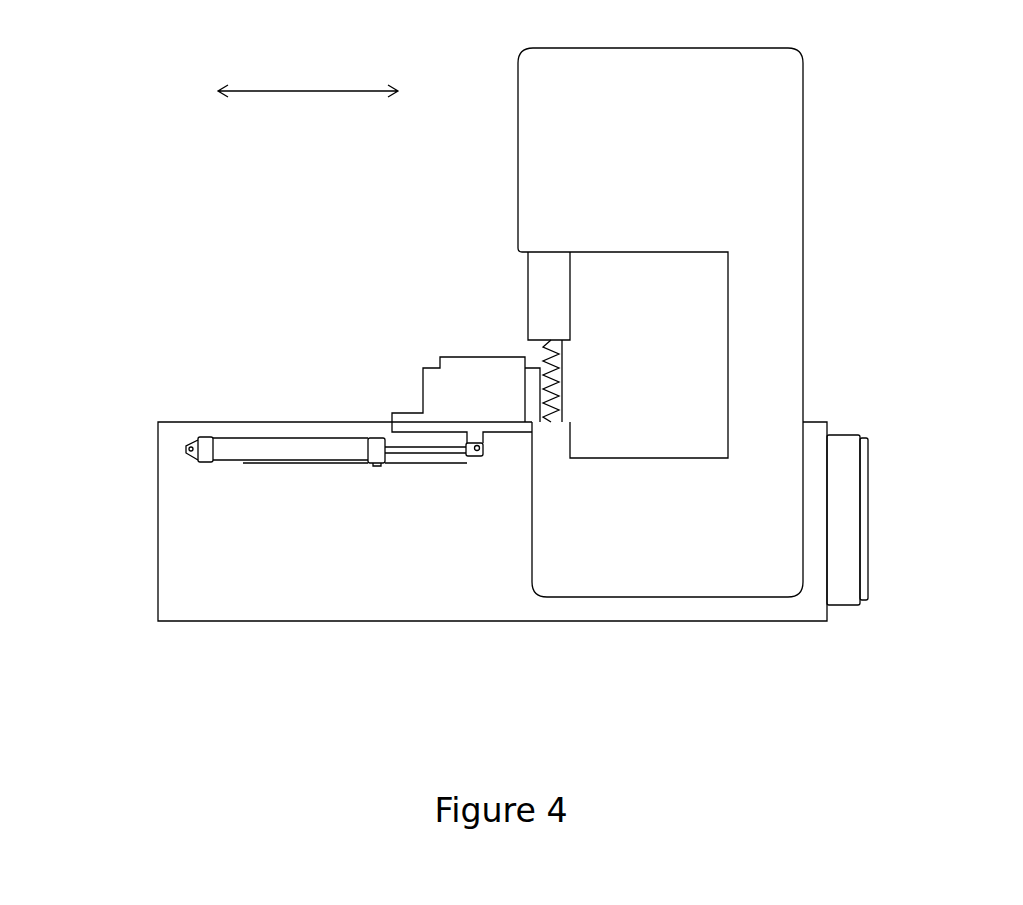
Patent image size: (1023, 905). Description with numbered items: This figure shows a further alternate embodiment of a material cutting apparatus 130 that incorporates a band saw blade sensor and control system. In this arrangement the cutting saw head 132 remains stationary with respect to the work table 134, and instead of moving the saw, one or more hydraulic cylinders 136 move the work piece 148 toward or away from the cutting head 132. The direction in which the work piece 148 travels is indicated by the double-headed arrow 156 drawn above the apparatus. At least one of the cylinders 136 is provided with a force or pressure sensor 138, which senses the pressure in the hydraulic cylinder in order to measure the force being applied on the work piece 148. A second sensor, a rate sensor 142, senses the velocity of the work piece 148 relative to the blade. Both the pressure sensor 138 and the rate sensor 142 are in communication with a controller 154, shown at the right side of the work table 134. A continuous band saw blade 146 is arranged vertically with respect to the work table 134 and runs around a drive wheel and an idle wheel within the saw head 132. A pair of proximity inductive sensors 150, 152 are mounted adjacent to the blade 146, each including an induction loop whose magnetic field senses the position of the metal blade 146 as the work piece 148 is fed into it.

The material cutting apparatus 130 is at (188, 188).
The cutting saw head 132 is at (783, 311).
The work table 134 is at (183, 557).
The hydraulic cylinder 136 is at (325, 431).
The force or pressure sensor 138 is at (198, 428).
The rate sensor 142 is at (478, 468).
The continuous band saw blade 146 is at (560, 379).
The work piece 148 is at (452, 388).
The proximity inductive sensor 150 is at (549, 324).
The proximity inductive sensor 152 is at (532, 409).
The controller 154 is at (857, 430).
The direction of movement 156 is at (296, 85).